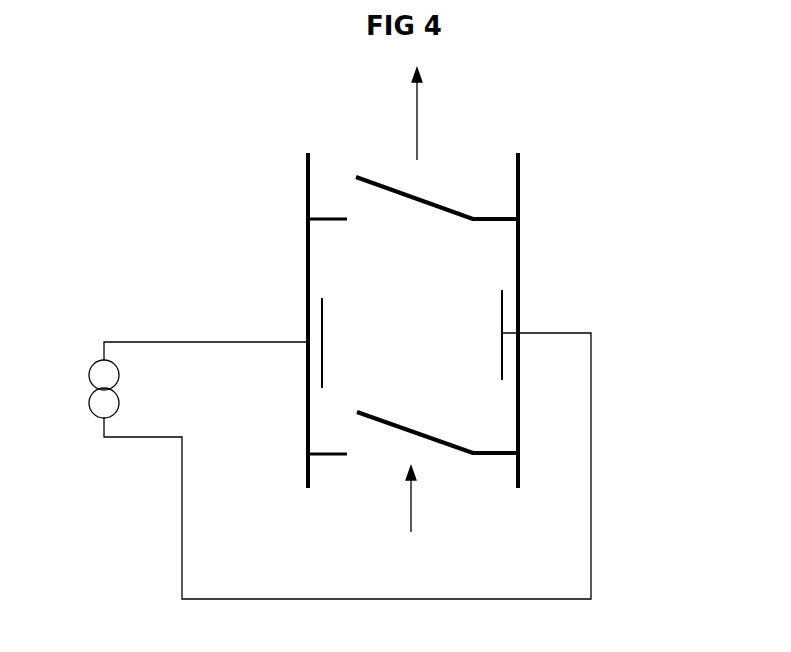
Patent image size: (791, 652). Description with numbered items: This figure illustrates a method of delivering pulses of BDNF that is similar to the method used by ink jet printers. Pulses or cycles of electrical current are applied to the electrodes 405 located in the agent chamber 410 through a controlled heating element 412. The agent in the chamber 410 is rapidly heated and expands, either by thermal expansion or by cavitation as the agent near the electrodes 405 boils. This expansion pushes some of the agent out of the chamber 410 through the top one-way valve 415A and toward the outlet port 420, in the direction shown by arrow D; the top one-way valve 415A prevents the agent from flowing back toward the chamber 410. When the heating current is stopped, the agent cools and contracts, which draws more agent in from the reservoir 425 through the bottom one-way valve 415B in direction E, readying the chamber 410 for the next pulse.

The electrodes 405 is at (322, 317).
The agent chamber 410 is at (413, 300).
The controlled heating element 412 is at (86, 390).
The top one-way valve 415A is at (407, 219).
The bottom one-way valve 415B is at (423, 423).
The outlet port 420 is at (451, 128).
The reservoir 425 is at (347, 466).